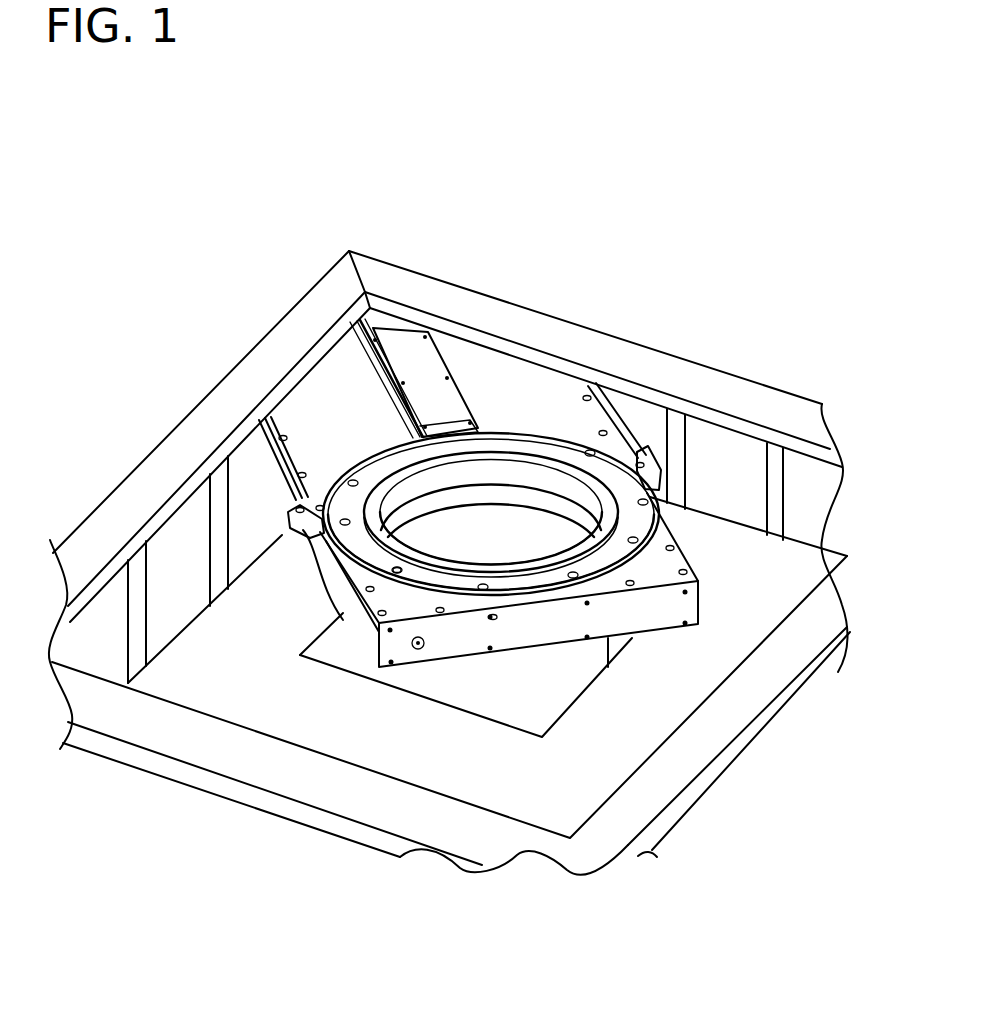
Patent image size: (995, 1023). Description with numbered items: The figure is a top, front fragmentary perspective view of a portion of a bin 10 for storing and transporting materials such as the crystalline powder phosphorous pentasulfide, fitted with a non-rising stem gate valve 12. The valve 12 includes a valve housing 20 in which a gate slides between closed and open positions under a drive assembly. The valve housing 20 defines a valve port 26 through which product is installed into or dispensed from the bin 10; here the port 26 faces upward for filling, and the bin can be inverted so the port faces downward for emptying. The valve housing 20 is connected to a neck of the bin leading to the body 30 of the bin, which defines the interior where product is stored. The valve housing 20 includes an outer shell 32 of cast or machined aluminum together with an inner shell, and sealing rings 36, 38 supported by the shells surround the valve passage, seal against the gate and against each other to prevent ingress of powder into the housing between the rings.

The bin 10 is at (708, 280).
The gate valve 12 is at (690, 523).
The valve housing 20 is at (607, 417).
The valve port 26 is at (545, 457).
The body 30 is at (342, 653).
The outer shell 32 is at (405, 490).
The sealing ring 36 is at (311, 407).
The sealing ring 38 is at (505, 490).